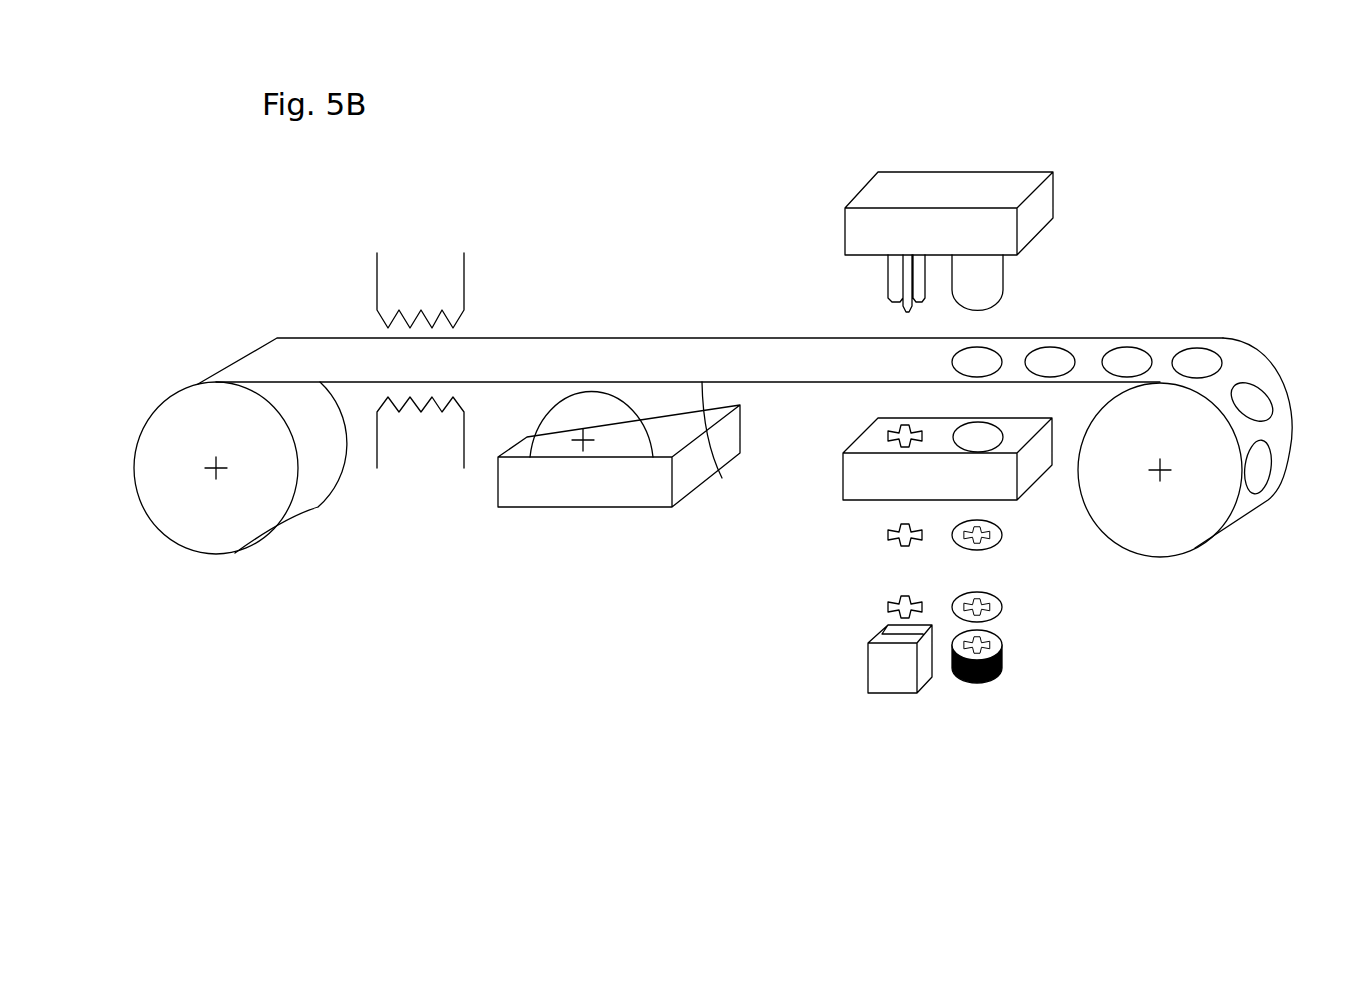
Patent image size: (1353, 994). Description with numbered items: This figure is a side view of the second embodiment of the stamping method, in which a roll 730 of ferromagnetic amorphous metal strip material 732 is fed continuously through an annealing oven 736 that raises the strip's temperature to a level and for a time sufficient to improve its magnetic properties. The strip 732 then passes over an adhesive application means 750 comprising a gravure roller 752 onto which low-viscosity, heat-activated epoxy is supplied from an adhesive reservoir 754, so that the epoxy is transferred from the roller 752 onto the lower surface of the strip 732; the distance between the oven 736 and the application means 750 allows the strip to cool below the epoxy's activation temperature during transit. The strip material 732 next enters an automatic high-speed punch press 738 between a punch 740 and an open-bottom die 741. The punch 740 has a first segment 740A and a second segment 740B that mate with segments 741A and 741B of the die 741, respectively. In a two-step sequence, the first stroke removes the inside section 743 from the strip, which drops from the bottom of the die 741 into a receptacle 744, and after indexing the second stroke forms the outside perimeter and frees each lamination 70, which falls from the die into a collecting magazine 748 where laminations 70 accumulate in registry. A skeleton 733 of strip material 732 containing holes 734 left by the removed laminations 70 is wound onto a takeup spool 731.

The lamination 70 is at (973, 550).
The roll 730 is at (220, 573).
The takeup spool 731 is at (1195, 567).
The ferromagnetic amorphous metal strip material 732 is at (322, 321).
The skeleton 733 is at (1100, 330).
The holes 734 is at (1195, 364).
The annealing oven 736 is at (421, 268).
The automatic high-speed punch press 738 is at (965, 210).
The punch 740 is at (845, 215).
The first punch segment 740A is at (888, 289).
The second punch segment 740B is at (1003, 285).
The open-bottom die 741 is at (843, 477).
The first die segment 741A is at (893, 432).
The second die segment 741B is at (973, 453).
The inside section 743 is at (888, 604).
The receptacle 744 is at (903, 693).
The collecting magazine 748 is at (973, 690).
The adhesive application means 750 is at (537, 507).
The gravure roller 752 is at (670, 400).
The adhesive reservoir 754 is at (590, 485).